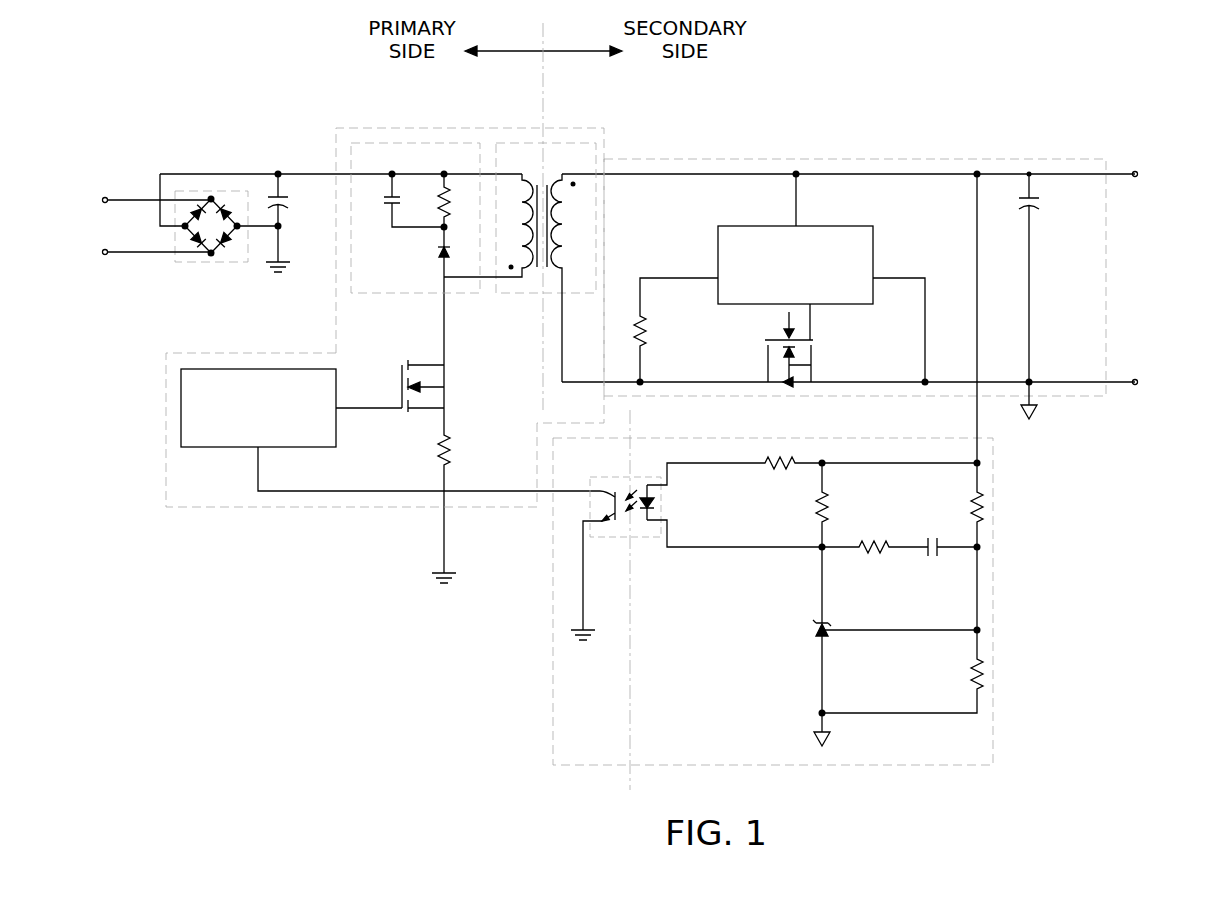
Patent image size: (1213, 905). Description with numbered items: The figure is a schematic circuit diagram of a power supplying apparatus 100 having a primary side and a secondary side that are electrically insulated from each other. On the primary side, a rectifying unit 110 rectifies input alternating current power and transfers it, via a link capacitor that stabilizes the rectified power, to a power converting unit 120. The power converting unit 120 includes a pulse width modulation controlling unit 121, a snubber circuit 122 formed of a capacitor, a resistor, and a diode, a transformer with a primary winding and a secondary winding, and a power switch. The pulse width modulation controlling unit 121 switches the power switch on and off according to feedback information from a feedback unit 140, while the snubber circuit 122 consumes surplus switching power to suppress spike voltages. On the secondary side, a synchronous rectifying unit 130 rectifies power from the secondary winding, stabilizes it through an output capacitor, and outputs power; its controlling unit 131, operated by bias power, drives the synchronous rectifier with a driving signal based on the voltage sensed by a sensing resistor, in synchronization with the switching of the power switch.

The power supplying apparatus 100 is at (778, 63).
The rectifying unit 110 is at (197, 262).
The power converting unit 120 is at (458, 128).
The pulse width modulation controlling unit 121 is at (256, 369).
The snubber circuit 122 is at (391, 138).
The synchronous rectifying unit 130 is at (852, 159).
The controlling unit 131 is at (873, 247).
The feedback unit 140 is at (993, 605).